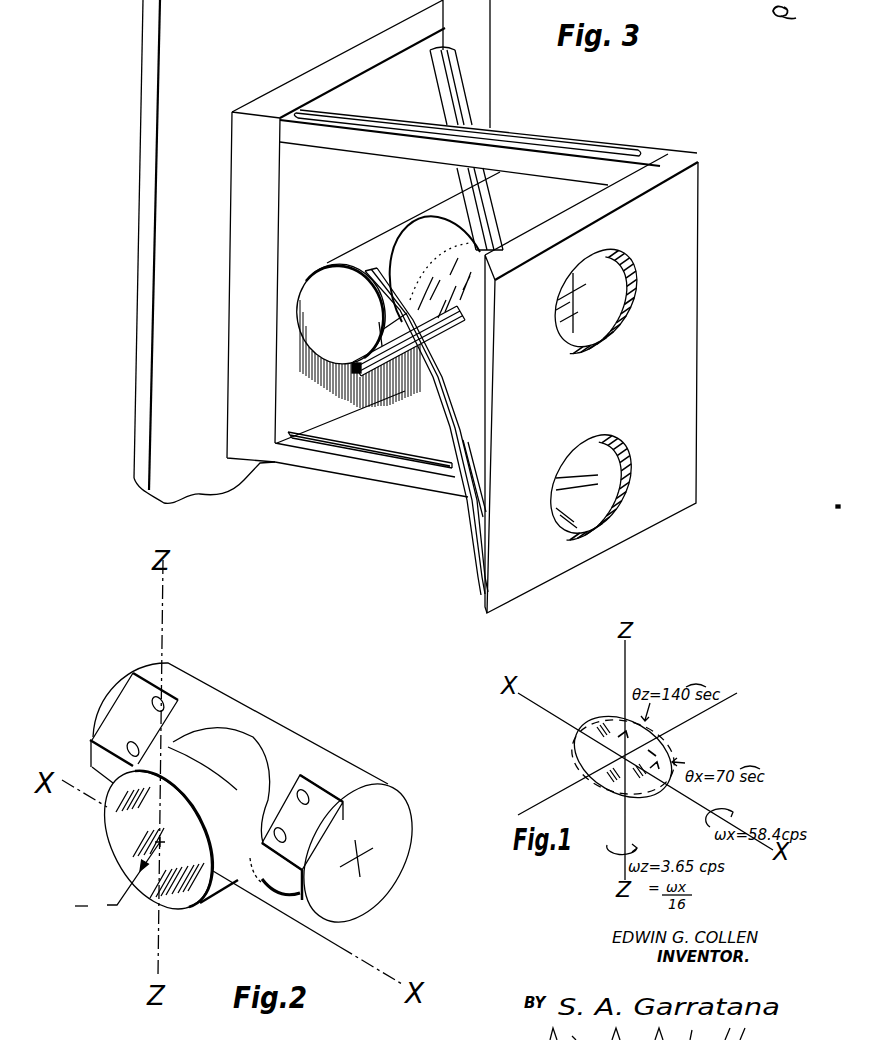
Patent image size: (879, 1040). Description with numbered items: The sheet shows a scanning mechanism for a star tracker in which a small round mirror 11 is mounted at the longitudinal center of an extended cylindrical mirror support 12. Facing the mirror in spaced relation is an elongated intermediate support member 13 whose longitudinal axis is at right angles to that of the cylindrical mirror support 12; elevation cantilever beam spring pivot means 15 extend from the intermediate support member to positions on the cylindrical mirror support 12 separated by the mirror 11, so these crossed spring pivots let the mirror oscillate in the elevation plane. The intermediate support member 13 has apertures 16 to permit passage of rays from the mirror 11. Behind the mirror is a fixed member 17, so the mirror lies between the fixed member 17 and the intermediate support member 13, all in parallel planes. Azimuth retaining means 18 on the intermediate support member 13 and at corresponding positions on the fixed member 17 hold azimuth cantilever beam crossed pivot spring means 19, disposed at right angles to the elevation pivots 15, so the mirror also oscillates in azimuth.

In FIG. 3, the round mirror 11 is at (447, 256).
In FIG. 2, the round mirror 11 is at (118, 838).
In FIG. 1, the round mirror 11 is at (578, 752).
In FIG. 3, the cylindrical mirror support 12 is at (361, 247).
In FIG. 2, the cylindrical mirror support 12 is at (337, 766).
In FIG. 3, the intermediate support member 13 is at (610, 383).
In FIG. 3, the elevation cantilever beam spring pivot means 15 is at (413, 368).
In FIG. 3, the apertures 16 is at (593, 516).
In FIG. 3, the fixed member 17 is at (168, 42).
In FIG. 3, the azimuth retaining means 18 is at (331, 60).
In FIG. 3, the azimuth cantilever beam crossed pivot spring means 19 is at (363, 466).